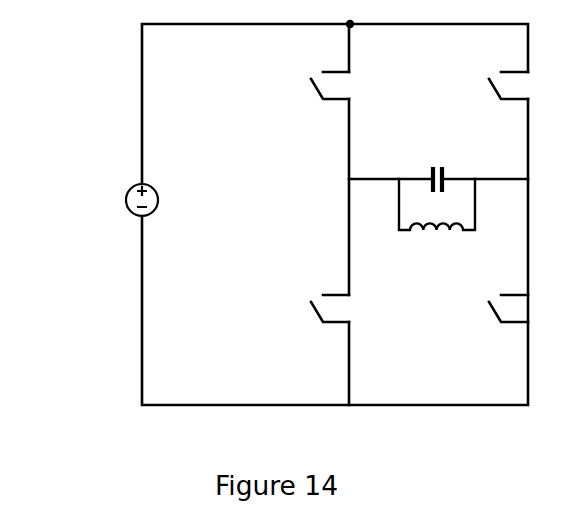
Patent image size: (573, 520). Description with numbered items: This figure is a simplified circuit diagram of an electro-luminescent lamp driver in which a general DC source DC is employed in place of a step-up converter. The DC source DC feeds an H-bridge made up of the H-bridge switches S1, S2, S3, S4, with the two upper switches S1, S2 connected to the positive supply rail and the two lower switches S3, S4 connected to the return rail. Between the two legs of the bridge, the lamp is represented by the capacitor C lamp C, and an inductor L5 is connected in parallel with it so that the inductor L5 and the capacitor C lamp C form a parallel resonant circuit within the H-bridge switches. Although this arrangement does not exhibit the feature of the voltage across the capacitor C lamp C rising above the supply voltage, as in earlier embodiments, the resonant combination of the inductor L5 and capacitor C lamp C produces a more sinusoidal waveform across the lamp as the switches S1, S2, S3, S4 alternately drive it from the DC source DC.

The switch S1 is at (323, 68).
The switch S2 is at (502, 68).
The switch S3 is at (323, 294).
The switch S4 is at (502, 294).
The capacitor C lamp C is at (441, 160).
The inductor L5 is at (437, 221).
The DC source DC is at (95, 209).